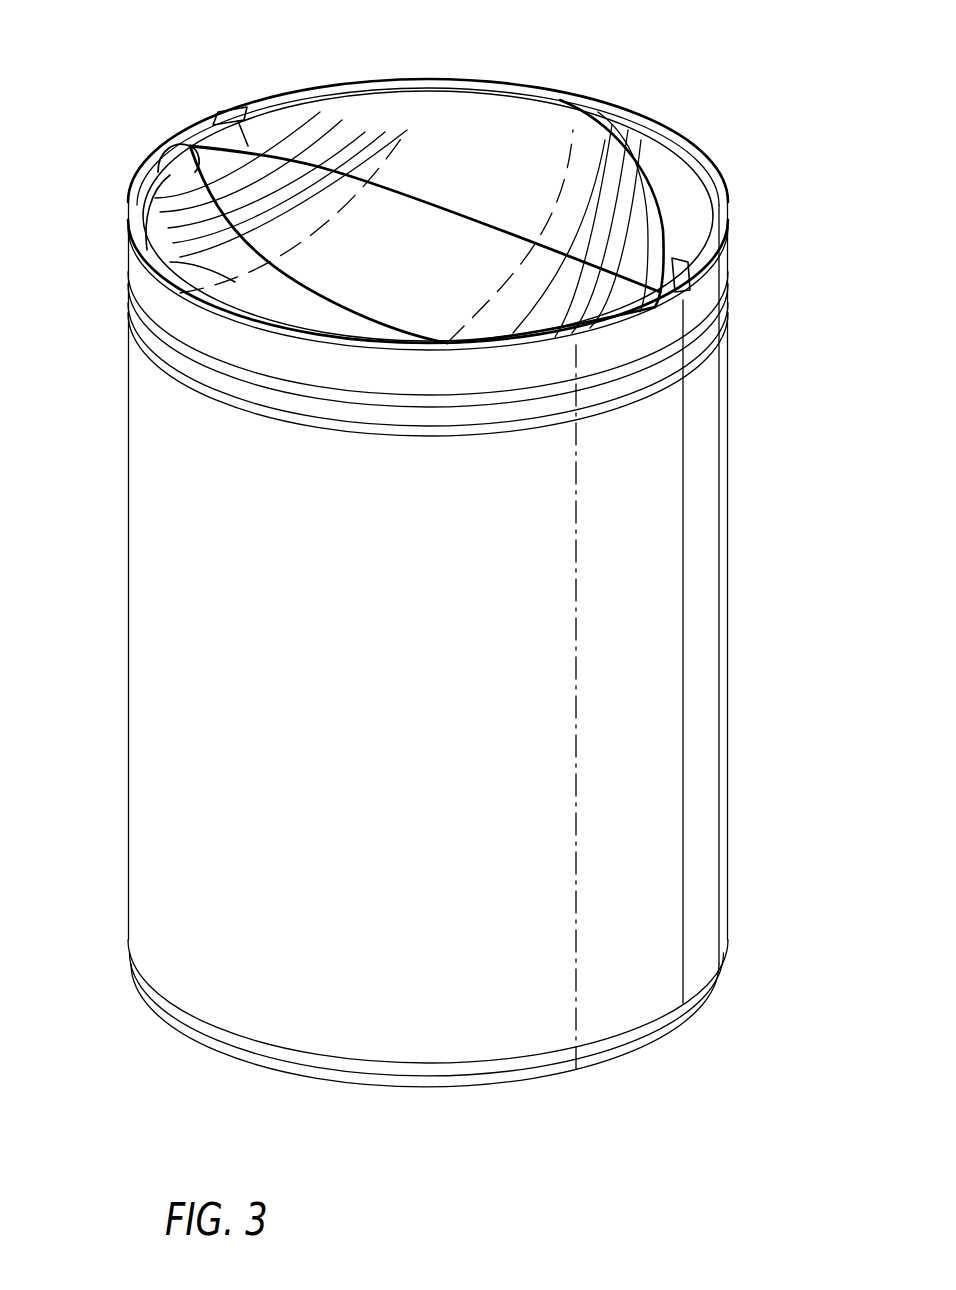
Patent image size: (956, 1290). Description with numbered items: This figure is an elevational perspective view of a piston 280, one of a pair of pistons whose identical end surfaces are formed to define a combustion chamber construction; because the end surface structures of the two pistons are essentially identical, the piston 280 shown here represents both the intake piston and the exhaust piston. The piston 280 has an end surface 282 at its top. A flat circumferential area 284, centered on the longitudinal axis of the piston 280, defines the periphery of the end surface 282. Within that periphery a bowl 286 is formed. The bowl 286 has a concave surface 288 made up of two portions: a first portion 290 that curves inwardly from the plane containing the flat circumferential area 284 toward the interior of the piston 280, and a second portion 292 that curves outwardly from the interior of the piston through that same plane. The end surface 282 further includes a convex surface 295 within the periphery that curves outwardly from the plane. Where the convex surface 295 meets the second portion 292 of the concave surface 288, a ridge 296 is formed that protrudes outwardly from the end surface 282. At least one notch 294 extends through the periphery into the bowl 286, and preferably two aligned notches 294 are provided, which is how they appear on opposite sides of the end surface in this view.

The piston 280 is at (498, 644).
The end surface 282 is at (417, 182).
The flat circumferential area 284 is at (433, 211).
The bowl 286 is at (127, 157).
The concave surface 288 is at (100, 212).
The first portion 290 is at (140, 280).
The second portion 292 is at (281, 149).
The notch 294 is at (469, 197).
The convex surface 295 is at (559, 180).
The ridge 296 is at (467, 219).